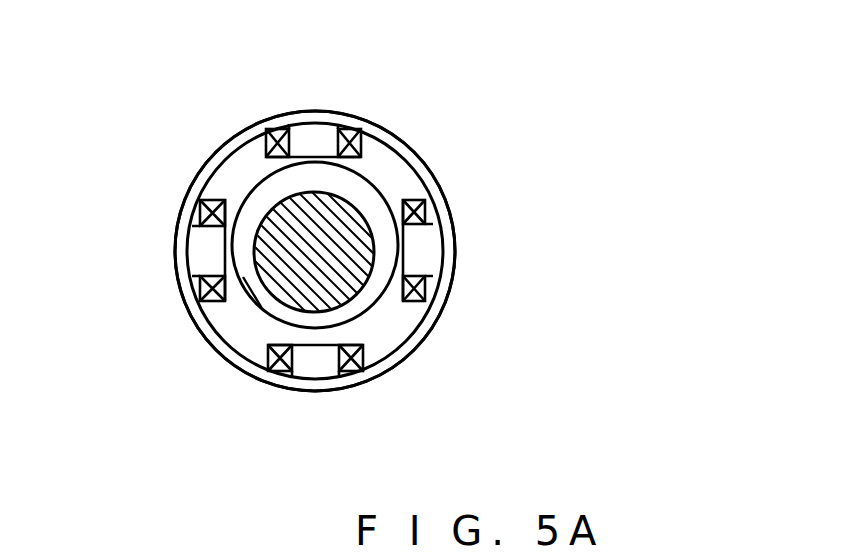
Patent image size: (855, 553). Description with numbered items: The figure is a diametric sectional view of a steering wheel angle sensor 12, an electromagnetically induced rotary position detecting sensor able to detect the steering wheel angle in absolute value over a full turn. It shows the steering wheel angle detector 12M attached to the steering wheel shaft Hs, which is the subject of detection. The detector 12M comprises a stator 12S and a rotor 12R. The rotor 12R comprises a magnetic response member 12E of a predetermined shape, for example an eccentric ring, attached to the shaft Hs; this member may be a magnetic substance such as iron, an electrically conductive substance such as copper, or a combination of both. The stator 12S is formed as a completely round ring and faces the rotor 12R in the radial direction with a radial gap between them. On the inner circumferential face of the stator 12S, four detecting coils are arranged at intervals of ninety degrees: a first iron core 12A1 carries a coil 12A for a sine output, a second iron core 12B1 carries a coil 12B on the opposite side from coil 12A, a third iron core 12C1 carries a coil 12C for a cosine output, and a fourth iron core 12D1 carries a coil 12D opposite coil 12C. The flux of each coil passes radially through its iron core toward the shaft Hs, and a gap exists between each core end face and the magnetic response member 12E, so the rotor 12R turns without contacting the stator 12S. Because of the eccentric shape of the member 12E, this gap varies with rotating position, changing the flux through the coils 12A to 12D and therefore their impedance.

The steering wheel angle sensor 12 is at (404, 116).
The steering wheel angle detector 12M is at (430, 156).
The stator 12S is at (423, 337).
The coil for sine output 12A is at (272, 137).
The first iron core 12A1 is at (313, 143).
The coil 12B is at (344, 368).
The second iron core 12B1 is at (311, 366).
The coil for cosine output 12C is at (203, 213).
The third iron core 12C1 is at (212, 248).
The coil 12D is at (424, 215).
The fourth iron core 12D1 is at (417, 248).
The magnetic response member 12E is at (257, 200).
The rotor 12R is at (250, 294).
The steering wheel shaft Hs is at (286, 287).